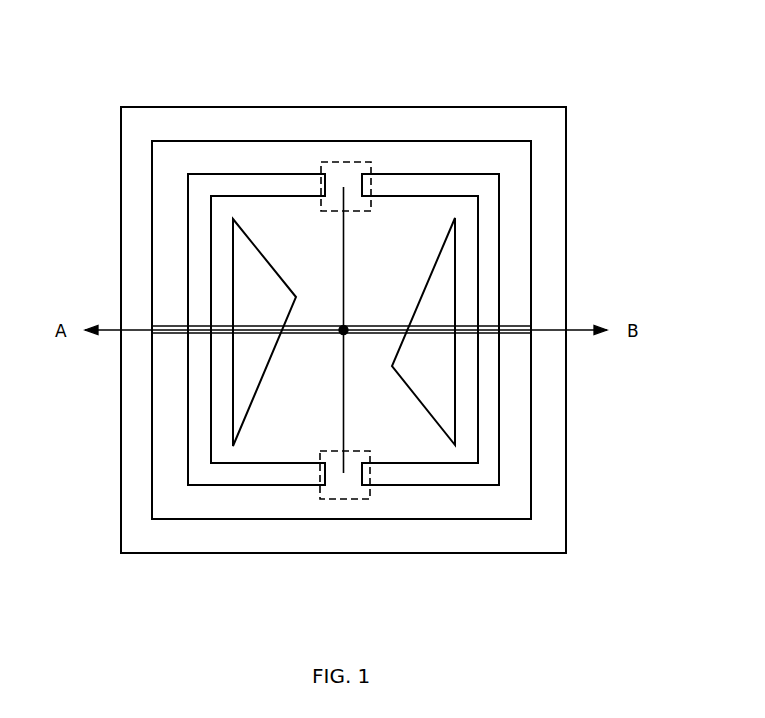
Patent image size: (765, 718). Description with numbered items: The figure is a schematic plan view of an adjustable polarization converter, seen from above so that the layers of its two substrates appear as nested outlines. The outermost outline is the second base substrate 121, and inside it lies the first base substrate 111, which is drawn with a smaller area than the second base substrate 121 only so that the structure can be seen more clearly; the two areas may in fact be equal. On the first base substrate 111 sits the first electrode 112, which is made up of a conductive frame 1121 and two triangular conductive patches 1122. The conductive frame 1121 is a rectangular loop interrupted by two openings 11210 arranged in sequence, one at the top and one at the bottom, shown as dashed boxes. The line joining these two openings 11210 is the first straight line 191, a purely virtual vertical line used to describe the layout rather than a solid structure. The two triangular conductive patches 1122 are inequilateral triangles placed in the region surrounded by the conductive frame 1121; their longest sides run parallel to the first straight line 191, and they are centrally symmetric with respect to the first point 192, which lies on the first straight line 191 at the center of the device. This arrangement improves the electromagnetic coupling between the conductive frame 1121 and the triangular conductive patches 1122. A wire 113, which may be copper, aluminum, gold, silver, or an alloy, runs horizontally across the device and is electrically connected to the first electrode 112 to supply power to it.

The first base substrate 111 is at (163, 290).
The first electrode 112 is at (343, 246).
The conductive frame 1121 is at (379, 188).
The triangular conductive patch 1122 is at (236, 300).
The opening 11210 is at (371, 205).
The wire 113 is at (527, 334).
The second base substrate 121 is at (557, 303).
The first straight line 191 is at (343, 472).
The first point 192 is at (343, 332).